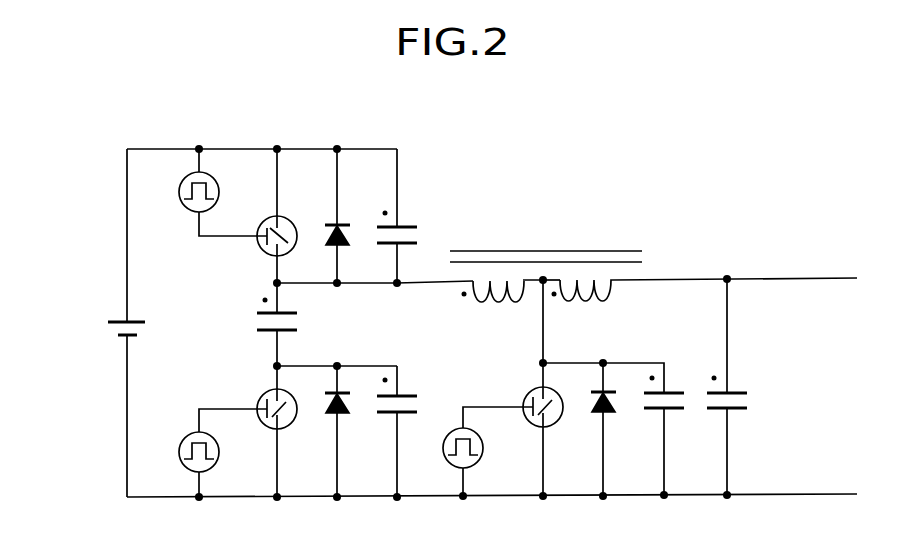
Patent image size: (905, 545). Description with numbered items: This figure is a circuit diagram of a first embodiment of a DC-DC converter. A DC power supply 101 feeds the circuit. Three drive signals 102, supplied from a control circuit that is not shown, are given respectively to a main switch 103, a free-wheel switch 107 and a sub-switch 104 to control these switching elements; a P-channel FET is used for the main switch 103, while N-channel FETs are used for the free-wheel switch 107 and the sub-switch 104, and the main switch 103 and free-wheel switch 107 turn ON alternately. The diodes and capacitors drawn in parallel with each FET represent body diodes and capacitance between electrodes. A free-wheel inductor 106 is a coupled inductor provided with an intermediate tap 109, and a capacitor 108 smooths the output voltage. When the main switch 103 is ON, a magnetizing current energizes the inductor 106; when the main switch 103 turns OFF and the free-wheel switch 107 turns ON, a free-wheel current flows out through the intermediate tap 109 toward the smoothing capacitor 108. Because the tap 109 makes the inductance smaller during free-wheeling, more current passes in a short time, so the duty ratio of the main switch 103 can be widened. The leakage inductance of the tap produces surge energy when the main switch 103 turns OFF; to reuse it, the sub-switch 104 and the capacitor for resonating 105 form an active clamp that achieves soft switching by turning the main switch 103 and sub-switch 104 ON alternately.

The DC power supply 101 is at (112, 331).
The drive signal 102 is at (188, 212).
The main switch 103 is at (268, 218).
The sub-switch 104 is at (258, 397).
The capacitor for resonating 105 is at (257, 322).
The free-wheel inductor 106 is at (602, 298).
The free-wheel switch 107 is at (533, 390).
The smoothing capacitor 108 is at (750, 398).
The intermediate tap 109 is at (552, 300).